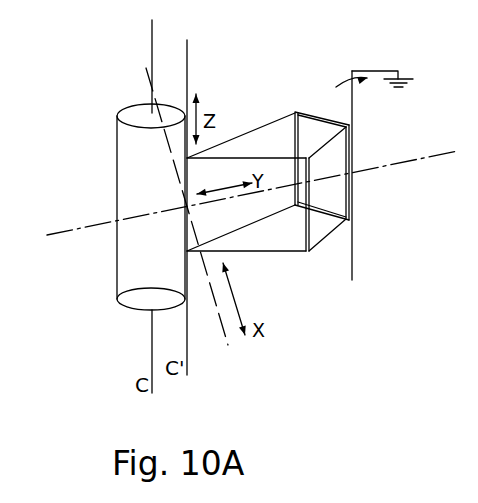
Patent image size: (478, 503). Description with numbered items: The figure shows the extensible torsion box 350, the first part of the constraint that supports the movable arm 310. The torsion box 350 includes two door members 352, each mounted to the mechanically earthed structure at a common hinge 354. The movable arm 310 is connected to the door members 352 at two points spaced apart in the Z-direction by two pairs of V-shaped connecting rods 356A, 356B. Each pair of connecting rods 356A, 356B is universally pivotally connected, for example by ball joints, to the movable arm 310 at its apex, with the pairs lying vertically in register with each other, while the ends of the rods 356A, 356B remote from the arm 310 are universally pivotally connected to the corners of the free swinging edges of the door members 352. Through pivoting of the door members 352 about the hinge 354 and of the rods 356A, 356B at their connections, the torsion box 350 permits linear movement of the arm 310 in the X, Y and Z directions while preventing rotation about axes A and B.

The movable arm 310 is at (132, 172).
The extensible torsion box 350 is at (326, 273).
The door member 352 is at (310, 127).
The common hinge 354 is at (348, 200).
The V-shaped connecting rods 356A is at (277, 157).
The V-shaped connecting rods 356B is at (243, 228).